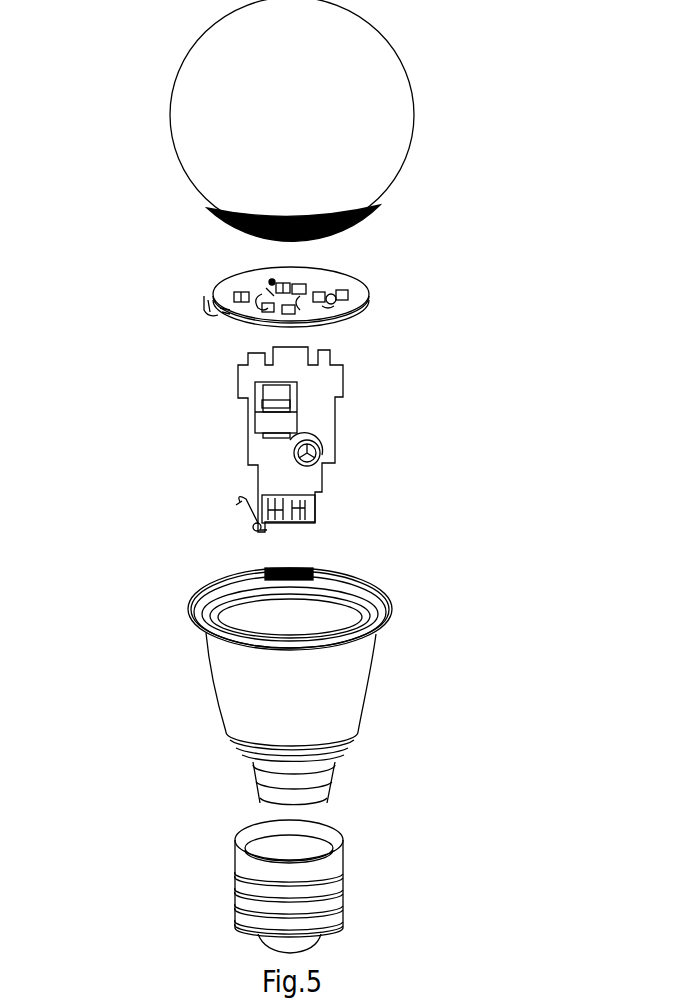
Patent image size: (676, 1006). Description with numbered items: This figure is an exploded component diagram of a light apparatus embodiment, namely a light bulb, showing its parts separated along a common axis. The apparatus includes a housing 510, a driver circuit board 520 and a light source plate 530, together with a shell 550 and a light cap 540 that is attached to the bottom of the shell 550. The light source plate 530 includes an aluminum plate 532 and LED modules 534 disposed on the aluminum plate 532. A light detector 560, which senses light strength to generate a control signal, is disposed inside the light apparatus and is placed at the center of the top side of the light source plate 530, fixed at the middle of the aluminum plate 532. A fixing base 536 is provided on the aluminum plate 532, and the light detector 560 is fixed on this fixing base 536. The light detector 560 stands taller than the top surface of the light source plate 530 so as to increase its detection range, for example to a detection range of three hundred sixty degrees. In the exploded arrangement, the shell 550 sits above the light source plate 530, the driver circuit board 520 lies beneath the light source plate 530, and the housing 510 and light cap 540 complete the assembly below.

The housing 510 is at (348, 686).
The driver circuit board 520 is at (369, 439).
The light source plate 530 is at (370, 294).
The aluminum plate 532 is at (166, 317).
The LED modules 534 is at (168, 277).
The fixing base 536 is at (207, 262).
The light cap 540 is at (368, 886).
The shell 550 is at (363, 120).
The light detector 560 is at (395, 257).